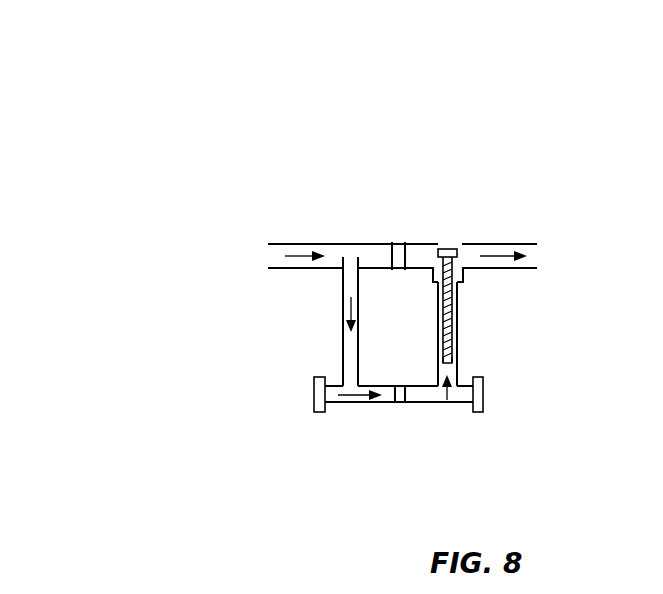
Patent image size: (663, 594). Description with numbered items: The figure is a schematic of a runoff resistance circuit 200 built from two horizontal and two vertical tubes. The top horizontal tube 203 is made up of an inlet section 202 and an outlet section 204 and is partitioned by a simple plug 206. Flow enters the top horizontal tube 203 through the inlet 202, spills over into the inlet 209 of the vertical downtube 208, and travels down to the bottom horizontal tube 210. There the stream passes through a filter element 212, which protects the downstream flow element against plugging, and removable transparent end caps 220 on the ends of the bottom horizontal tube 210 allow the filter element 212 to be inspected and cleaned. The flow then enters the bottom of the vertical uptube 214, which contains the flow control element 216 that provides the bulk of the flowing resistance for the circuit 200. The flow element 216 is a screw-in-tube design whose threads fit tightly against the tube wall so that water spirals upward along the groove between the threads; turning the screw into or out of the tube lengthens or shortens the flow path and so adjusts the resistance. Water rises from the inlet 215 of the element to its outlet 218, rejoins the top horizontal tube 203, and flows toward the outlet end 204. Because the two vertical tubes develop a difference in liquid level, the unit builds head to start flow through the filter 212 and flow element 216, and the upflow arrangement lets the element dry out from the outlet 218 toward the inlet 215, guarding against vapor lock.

The circuit design 200 is at (128, 56).
The inlet section 202 is at (272, 255).
The top horizontal tube 203 is at (318, 243).
The outlet section 204 is at (537, 256).
The plug 206 is at (398, 244).
The vertical downtube 208 is at (342, 352).
The inlet of the downtube 209 is at (350, 262).
The bottom horizontal tube 210 is at (362, 403).
The filter element 212 is at (400, 402).
The vertical uptube 214 is at (458, 377).
The inlet of the flow element 215 is at (441, 361).
The flow control element 216 is at (445, 248).
The outlet of the flow element 218 is at (462, 258).
The removable transparent end caps 220 is at (313, 393).